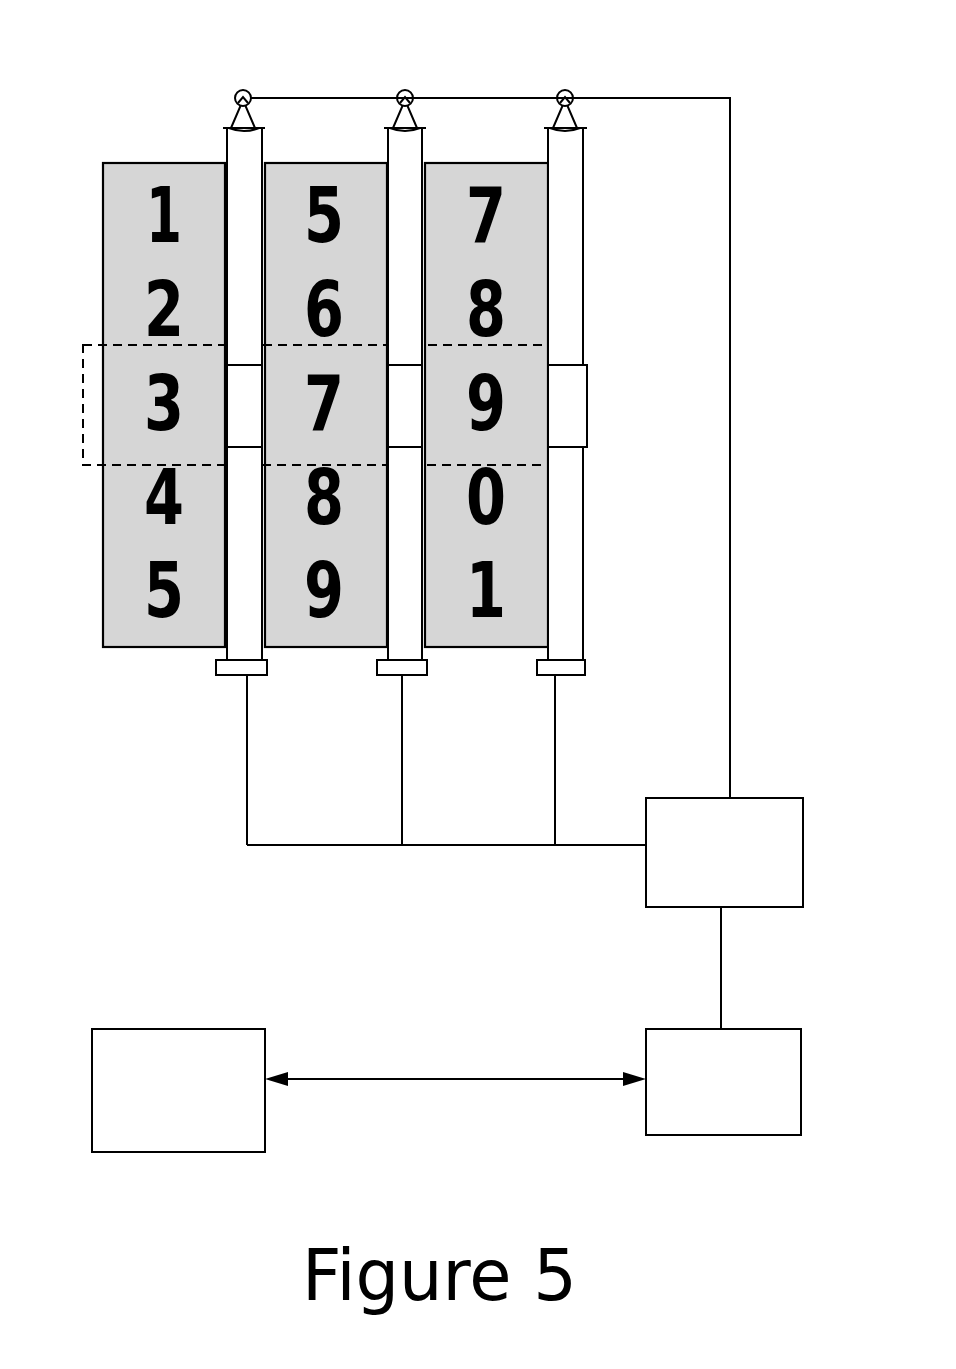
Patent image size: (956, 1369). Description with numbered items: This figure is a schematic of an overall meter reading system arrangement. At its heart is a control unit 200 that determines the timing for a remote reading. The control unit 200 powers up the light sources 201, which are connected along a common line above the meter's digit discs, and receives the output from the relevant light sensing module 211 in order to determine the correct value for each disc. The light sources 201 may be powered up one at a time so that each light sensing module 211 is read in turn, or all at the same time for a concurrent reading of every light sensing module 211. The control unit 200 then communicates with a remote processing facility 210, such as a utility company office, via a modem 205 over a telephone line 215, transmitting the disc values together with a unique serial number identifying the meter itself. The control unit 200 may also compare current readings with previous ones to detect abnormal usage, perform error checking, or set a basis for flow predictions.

The control unit 200 is at (738, 906).
The light sources 201 is at (566, 92).
The modem 205 is at (738, 1120).
The remote processing facility 210 is at (215, 1041).
The light sensing module 211 is at (572, 676).
The telephone line 215 is at (400, 1080).